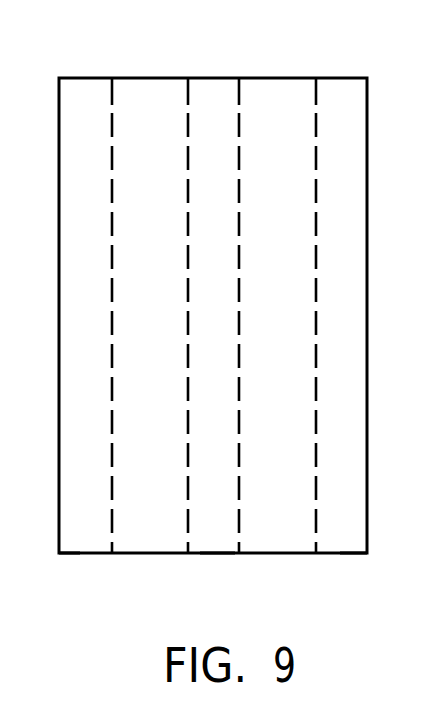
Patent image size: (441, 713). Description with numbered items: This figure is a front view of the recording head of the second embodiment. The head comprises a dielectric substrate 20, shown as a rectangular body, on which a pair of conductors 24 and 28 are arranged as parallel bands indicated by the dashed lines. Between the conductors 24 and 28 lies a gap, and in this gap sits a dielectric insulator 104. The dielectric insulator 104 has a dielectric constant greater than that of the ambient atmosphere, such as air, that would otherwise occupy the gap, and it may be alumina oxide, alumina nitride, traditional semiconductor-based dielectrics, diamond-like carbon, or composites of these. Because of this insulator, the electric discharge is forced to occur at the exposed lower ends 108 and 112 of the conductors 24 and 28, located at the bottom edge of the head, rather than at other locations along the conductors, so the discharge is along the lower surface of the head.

The dielectric substrate 20 is at (369, 297).
The conductor 24 is at (147, 90).
The conductor 28 is at (282, 88).
The dielectric insulator 104 is at (217, 538).
The lower end of conductor 108 is at (72, 553).
The lower end of conductor 112 is at (348, 553).